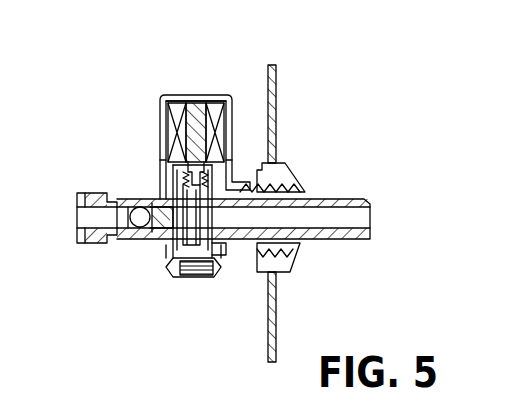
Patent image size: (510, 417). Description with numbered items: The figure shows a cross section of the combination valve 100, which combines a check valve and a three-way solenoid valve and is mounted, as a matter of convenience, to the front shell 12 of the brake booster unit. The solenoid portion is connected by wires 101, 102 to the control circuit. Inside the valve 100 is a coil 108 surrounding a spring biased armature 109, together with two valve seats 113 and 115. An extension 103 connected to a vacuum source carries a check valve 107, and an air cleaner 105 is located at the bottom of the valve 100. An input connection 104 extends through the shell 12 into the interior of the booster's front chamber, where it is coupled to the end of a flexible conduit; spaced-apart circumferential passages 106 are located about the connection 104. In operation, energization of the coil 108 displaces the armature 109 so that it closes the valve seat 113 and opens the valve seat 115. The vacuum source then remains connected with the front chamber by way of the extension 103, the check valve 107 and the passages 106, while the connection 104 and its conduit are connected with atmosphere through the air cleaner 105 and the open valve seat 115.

The front shell 12 is at (270, 333).
The combination valve 100 is at (166, 137).
The wire 101 is at (177, 95).
The wire 102 is at (213, 95).
The extension 103 is at (137, 202).
The input connection 104 is at (345, 198).
The air cleaner 105 is at (175, 270).
The circumferential passages 106 is at (300, 186).
The check valve 107 is at (118, 255).
The coil 108 is at (168, 120).
The spring biased armature 109 is at (184, 178).
The valve seat 113 is at (228, 182).
The valve seat 115 is at (218, 260).